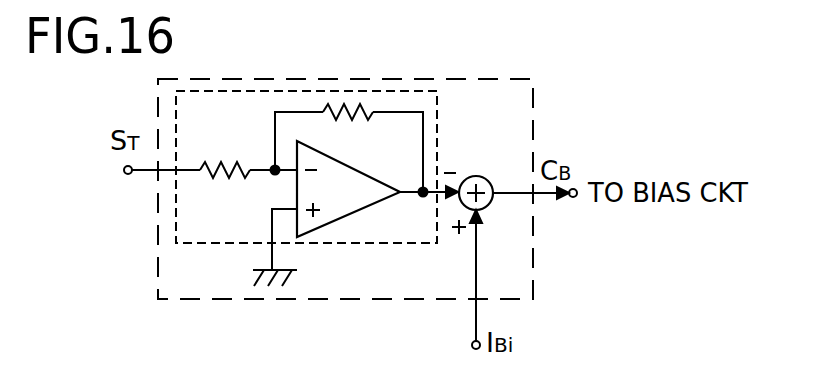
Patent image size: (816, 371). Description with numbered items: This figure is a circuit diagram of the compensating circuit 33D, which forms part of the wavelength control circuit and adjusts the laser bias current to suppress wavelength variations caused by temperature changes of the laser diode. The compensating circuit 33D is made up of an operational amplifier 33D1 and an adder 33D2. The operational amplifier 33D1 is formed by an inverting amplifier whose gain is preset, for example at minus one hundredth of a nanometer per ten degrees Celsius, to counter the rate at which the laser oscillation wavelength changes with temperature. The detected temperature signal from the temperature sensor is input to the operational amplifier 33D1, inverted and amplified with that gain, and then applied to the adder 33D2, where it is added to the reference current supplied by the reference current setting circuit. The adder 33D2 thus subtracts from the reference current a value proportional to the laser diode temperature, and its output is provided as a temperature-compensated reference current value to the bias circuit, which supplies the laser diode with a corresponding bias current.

The compensating circuit 33D is at (242, 76).
The operational amplifier 33D1 is at (331, 246).
The adder 33D2 is at (503, 150).